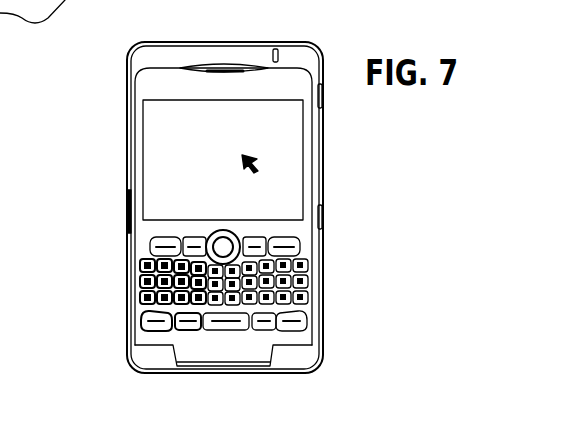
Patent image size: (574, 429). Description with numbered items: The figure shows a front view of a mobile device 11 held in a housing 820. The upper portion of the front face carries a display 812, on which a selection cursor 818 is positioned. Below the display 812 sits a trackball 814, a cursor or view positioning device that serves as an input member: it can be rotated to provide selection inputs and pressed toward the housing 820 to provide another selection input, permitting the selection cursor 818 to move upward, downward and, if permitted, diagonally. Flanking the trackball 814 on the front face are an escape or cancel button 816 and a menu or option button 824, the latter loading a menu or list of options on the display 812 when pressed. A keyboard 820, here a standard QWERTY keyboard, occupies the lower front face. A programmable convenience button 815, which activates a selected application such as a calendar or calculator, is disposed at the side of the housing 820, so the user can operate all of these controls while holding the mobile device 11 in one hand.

The mobile device 11 is at (250, 42).
The display 812 is at (203, 133).
The trackball 814 is at (254, 225).
The programmable convenience button 815 is at (125, 207).
The escape or cancel button 816 is at (233, 230).
The selection cursor 818 is at (258, 155).
The housing 820 is at (162, 334).
The menu or option button 824 is at (197, 242).